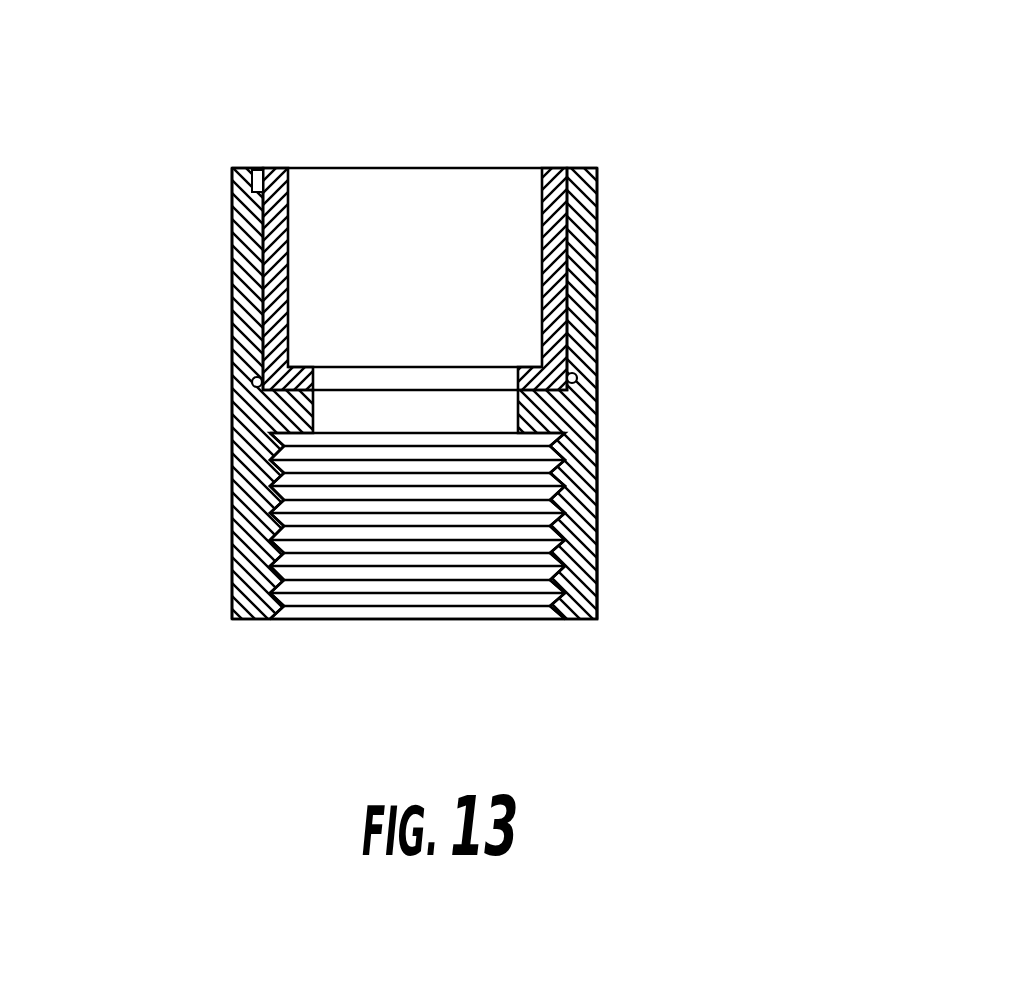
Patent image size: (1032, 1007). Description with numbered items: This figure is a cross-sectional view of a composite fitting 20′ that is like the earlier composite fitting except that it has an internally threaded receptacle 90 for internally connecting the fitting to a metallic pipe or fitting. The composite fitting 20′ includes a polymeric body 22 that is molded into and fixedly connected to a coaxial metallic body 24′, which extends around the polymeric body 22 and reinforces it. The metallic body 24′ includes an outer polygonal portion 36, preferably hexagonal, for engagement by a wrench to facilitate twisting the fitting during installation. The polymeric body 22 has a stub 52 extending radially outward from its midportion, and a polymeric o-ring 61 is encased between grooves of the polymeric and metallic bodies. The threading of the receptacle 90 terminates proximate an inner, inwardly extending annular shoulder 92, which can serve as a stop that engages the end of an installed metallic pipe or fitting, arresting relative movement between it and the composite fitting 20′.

The composite fitting 20′ is at (773, 121).
The polymeric body 22 is at (556, 166).
The stub 52 is at (600, 308).
The o-ring 61 is at (600, 368).
The metallic body 24′ is at (600, 478).
The outer polygonal portion 36 is at (232, 437).
The annular shoulder 92 is at (301, 437).
The internally threaded receptacle 90 is at (289, 619).